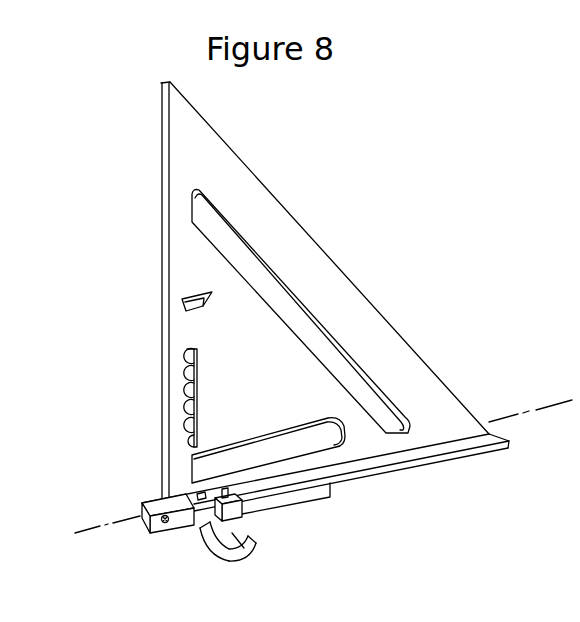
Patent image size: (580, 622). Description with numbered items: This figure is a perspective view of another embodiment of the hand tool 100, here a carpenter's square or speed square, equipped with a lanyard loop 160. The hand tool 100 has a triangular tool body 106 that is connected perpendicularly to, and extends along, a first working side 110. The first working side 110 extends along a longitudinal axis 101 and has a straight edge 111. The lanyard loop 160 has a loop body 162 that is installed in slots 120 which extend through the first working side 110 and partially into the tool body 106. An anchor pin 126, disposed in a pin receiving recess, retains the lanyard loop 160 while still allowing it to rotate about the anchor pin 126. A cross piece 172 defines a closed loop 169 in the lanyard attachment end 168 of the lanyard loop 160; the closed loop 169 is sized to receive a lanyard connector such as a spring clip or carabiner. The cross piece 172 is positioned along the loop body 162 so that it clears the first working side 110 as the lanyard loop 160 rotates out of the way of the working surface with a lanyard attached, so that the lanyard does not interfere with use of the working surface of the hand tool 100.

The hand tool 100 is at (351, 252).
The tool body 106 is at (398, 395).
The longitudinal axis 101 is at (305, 468).
The first working side 110 is at (296, 499).
The straight edge 111 is at (328, 494).
The slots 120 is at (245, 497).
The anchor pin 126 is at (160, 521).
The loop body 162 is at (204, 532).
The cross piece 172 is at (240, 540).
The lanyard loop 160 is at (283, 556).
The lanyard attachment end 168 is at (223, 556).
The closed loop 169 is at (253, 553).